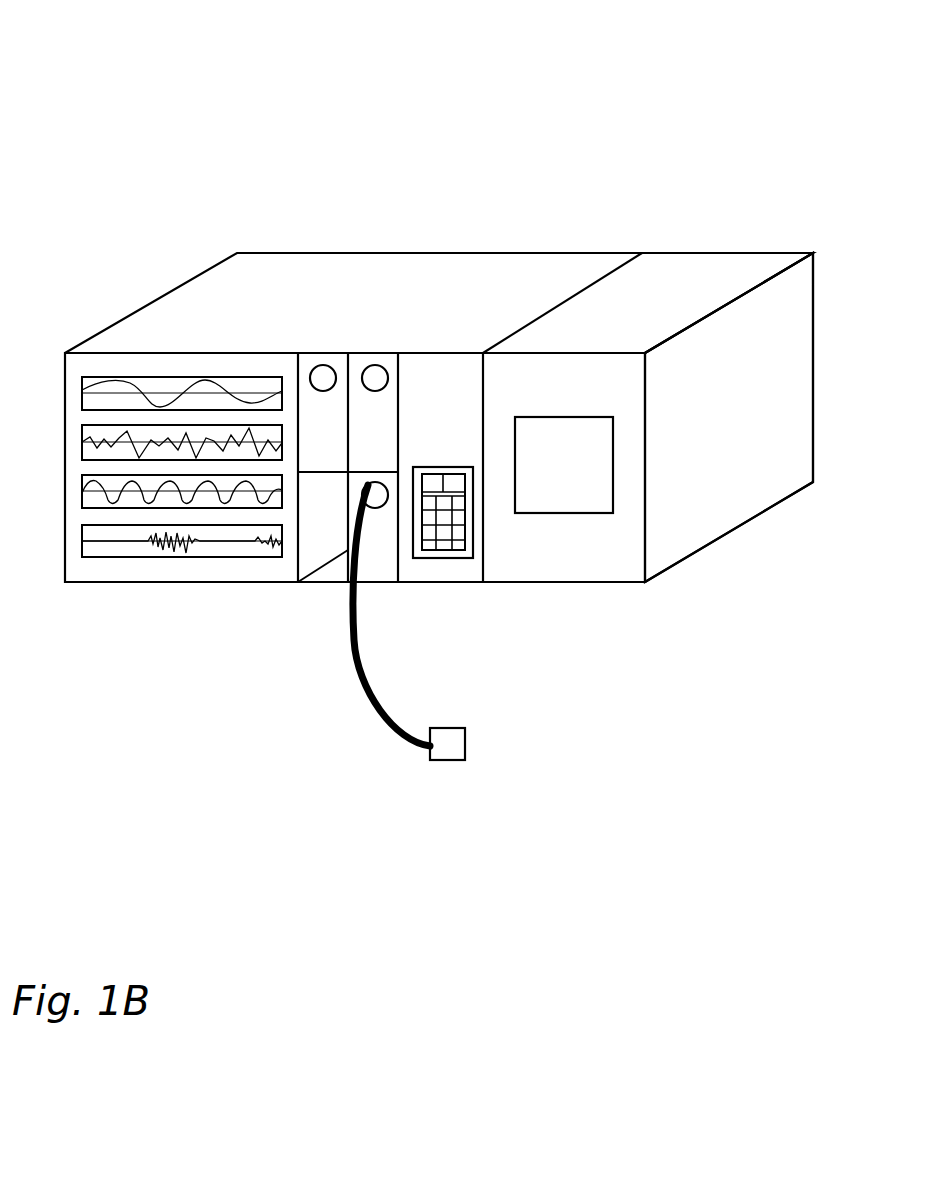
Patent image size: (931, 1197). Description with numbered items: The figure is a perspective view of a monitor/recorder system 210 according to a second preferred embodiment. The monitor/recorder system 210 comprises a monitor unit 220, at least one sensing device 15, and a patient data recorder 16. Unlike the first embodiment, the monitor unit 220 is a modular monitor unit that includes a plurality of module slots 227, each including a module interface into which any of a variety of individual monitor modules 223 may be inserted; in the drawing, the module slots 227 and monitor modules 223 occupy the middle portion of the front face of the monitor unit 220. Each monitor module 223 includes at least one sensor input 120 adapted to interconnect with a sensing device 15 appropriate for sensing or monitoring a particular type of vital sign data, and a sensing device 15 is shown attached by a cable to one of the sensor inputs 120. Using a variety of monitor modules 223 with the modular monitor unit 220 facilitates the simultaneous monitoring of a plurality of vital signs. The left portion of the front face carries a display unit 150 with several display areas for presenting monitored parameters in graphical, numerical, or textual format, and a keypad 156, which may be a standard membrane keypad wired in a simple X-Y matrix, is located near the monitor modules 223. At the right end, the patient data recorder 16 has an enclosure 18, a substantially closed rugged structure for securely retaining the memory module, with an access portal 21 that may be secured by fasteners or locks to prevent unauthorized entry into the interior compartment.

The monitor/recorder system 210 is at (160, 40).
The monitor unit 220 is at (495, 292).
The patient data recorder 16 is at (697, 278).
The enclosure 18 is at (688, 498).
The display unit 150 is at (130, 557).
The monitor module 223 is at (308, 407).
The module slot 227 is at (327, 545).
The sensor input 120 is at (378, 484).
The keypad 156 is at (473, 538).
The access portal 21 is at (582, 432).
The sensing device 15 is at (463, 747).